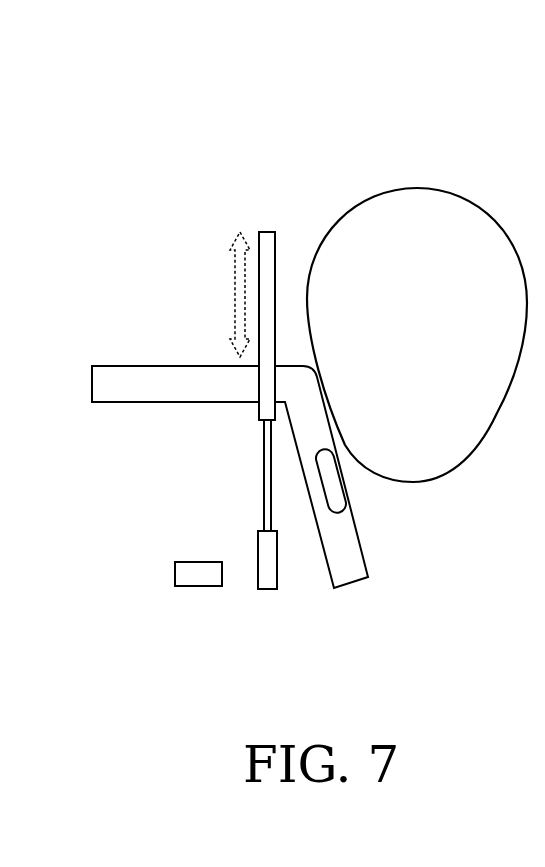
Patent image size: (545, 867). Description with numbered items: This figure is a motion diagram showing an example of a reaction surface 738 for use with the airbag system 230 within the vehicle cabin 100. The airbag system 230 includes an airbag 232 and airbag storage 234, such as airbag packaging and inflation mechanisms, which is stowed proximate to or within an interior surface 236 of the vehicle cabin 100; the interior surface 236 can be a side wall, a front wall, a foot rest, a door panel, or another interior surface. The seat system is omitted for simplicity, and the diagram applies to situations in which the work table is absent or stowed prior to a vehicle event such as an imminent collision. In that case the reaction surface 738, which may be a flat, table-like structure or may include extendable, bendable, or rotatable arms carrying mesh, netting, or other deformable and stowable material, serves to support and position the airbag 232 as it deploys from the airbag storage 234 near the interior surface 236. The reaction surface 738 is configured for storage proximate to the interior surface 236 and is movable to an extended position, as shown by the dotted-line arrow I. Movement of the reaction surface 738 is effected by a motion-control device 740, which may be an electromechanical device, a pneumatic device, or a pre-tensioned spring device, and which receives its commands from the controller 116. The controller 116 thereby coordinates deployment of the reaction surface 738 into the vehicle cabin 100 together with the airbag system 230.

The vehicle cabin 100 is at (151, 155).
The controller 116 is at (182, 562).
The airbag system 230 is at (483, 489).
The airbag 232 is at (433, 344).
The airbag storage 234 is at (340, 510).
The interior surface 236 is at (368, 561).
The reaction surface 738 is at (270, 232).
The motion-control device 740 is at (267, 590).
The dotted-line arrow I is at (235, 300).